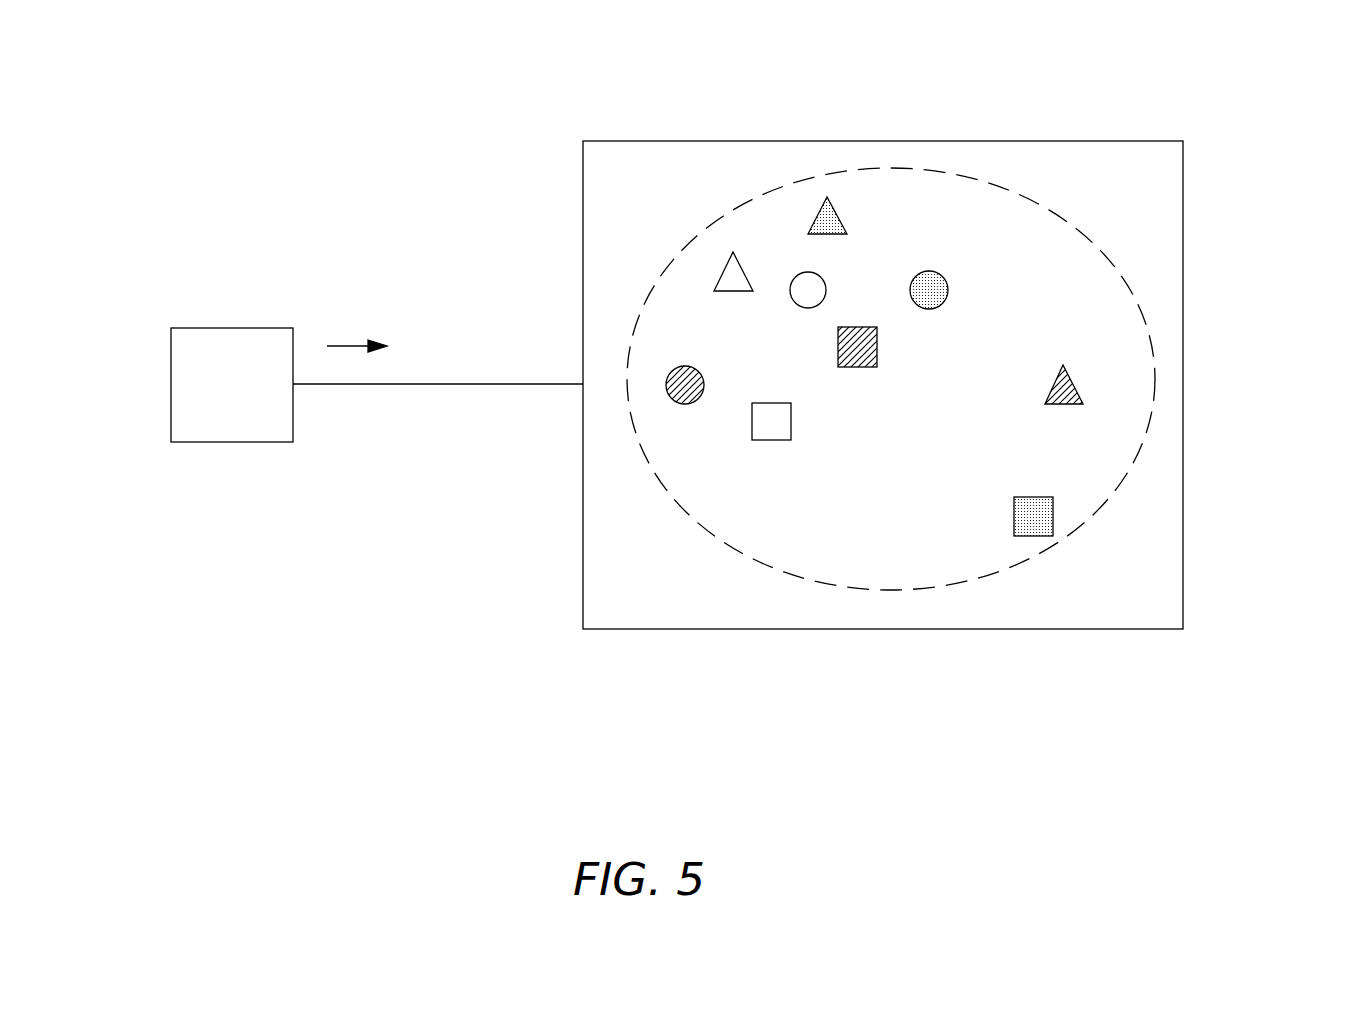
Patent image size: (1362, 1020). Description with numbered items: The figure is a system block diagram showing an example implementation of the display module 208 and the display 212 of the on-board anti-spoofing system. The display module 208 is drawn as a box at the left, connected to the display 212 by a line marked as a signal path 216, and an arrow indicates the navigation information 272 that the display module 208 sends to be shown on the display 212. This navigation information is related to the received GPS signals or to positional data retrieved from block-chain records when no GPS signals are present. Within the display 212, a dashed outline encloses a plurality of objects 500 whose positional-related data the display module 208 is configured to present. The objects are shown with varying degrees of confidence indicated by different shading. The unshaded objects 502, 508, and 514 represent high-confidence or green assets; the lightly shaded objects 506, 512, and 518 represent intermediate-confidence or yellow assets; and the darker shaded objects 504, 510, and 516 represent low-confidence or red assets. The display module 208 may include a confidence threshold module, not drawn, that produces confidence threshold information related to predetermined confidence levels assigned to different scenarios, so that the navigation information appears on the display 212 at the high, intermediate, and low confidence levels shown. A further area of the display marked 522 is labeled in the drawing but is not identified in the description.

The display module 208 is at (232, 385).
The display 212 is at (883, 385).
The signal path 216 is at (417, 385).
The navigation information 272 is at (350, 343).
The plurality of objects 500 is at (771, 563).
The unshaded object 502 is at (805, 290).
The darker shaded object 504 is at (673, 380).
The lightly shaded object 506 is at (931, 288).
The unshaded object 508 is at (733, 280).
The darker shaded object 510 is at (1060, 393).
The lightly shaded object 512 is at (827, 223).
The unshaded object 514 is at (770, 422).
The darker shaded object 516 is at (857, 352).
The lightly shaded object 518 is at (1035, 516).
The second display region 522 is at (1060, 694).